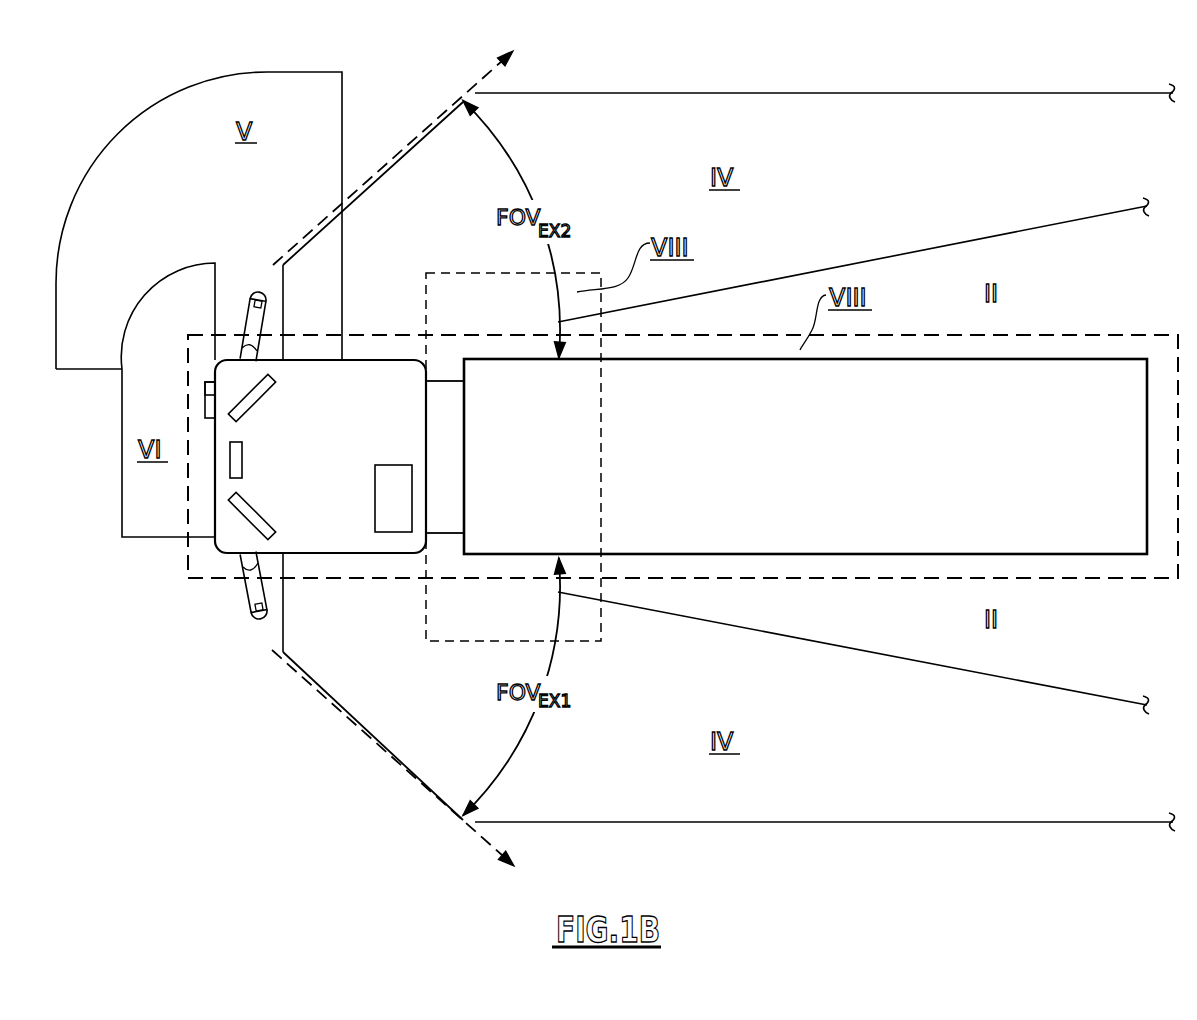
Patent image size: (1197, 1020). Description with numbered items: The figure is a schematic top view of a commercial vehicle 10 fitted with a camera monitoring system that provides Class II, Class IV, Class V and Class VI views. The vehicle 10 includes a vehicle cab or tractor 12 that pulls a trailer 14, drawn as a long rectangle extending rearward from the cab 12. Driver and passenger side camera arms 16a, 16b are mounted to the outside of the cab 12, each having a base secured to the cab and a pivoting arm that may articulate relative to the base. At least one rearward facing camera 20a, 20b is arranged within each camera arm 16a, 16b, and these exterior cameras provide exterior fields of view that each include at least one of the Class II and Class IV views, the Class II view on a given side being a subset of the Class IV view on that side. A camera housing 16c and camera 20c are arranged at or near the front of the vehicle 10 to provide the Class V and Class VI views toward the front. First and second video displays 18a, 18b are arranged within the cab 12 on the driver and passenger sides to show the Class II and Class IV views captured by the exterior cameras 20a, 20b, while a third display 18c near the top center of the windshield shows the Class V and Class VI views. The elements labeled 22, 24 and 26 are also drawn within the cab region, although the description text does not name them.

The commercial vehicle 10 is at (178, 341).
The vehicle cab 12 is at (292, 447).
The trailer 14 is at (1058, 345).
The driver side camera arm 16a is at (257, 595).
The passenger side camera arm 16b is at (248, 296).
The camera housing 16c is at (171, 404).
The first video display 18a is at (257, 510).
The second video display 18b is at (257, 397).
The third display 18c is at (229, 462).
The rearward facing camera 20a is at (268, 610).
The rearward facing camera 20b is at (264, 305).
The camera 20c is at (205, 388).
The interior chamber 22 is at (364, 378).
The controller 24 is at (351, 476).
The processor 26 is at (393, 475).